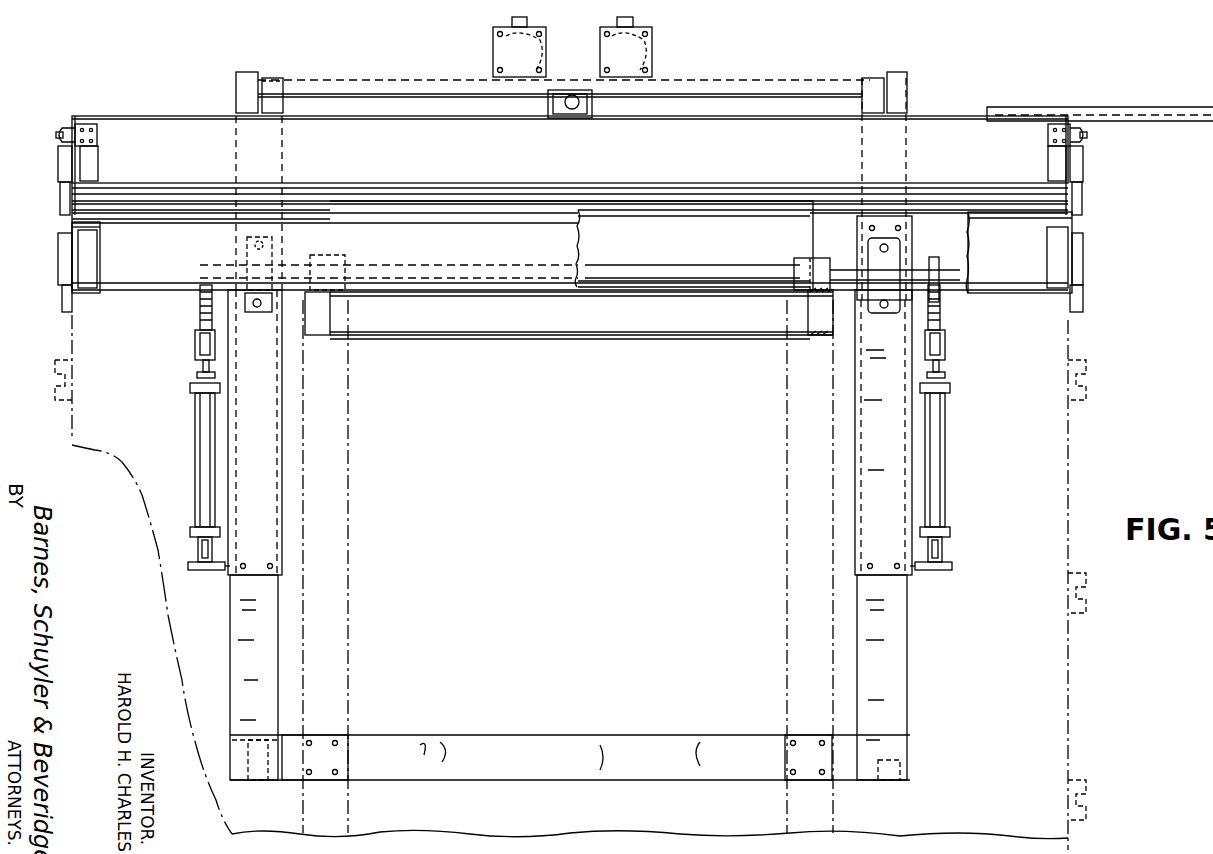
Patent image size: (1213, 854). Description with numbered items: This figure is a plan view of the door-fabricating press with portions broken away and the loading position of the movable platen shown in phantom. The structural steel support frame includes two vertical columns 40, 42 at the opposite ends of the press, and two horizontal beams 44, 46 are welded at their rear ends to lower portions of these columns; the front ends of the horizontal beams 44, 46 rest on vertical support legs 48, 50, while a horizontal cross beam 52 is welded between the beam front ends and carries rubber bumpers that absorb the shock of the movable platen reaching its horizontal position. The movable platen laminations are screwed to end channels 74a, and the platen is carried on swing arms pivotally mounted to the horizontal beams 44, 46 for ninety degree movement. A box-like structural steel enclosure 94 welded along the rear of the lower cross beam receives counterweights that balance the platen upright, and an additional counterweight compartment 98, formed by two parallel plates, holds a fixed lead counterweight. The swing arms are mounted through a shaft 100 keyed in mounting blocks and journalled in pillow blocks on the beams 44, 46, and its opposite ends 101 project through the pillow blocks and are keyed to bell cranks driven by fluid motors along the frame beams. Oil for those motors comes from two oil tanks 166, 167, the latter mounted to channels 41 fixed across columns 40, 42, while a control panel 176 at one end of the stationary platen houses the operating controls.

The vertical column 40 is at (893, 72).
The channel 41 is at (388, 85).
The vertical column 42 is at (247, 72).
The horizontal beam 44 is at (897, 650).
The horizontal beam 46 is at (243, 612).
The vertical support leg 48 is at (902, 770).
The vertical support leg 50 is at (258, 780).
The horizontal cross beam 52 is at (536, 758).
The end channel 74a is at (1035, 290).
The structural steel enclosure 94 is at (571, 245).
The counterweight compartment 98 is at (596, 322).
The shaft 100 is at (708, 250).
The shaft end 101 is at (939, 280).
The oil tank 166 is at (638, 52).
The oil tank 167 is at (505, 52).
The control panel 176 is at (1185, 112).